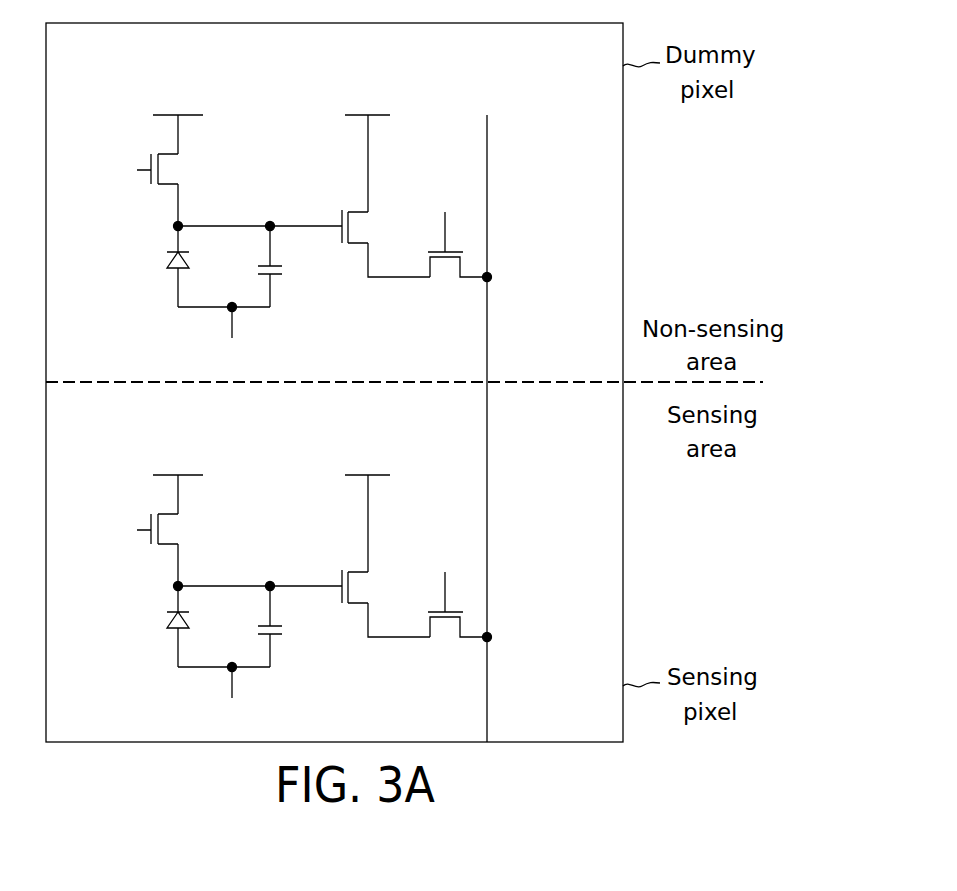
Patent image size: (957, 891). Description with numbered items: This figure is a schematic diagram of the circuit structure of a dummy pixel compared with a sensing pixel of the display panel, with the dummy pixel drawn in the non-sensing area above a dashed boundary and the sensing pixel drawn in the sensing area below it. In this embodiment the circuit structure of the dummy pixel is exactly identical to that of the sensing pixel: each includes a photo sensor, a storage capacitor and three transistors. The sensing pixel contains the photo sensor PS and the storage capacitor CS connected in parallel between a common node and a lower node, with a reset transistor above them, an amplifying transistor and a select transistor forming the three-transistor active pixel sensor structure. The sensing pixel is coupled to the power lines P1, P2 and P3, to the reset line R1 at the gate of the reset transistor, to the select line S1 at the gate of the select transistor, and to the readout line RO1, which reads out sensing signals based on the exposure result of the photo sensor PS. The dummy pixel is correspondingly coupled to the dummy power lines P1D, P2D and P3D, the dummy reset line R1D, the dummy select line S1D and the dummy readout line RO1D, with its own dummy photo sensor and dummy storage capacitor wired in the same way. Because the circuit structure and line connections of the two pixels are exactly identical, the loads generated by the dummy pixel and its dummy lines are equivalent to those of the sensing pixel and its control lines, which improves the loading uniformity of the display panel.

The dummy power line P1D is at (178, 119).
The dummy reset line R1D is at (131, 190).
The dummy power line P3D is at (232, 339).
The dummy power line P2D is at (386, 180).
The dummy select line S1D is at (453, 228).
The dummy readout line RO1D is at (492, 233).
The power line P1 is at (178, 479).
The reset line R1 is at (139, 550).
The photo sensor PS is at (161, 626).
The storage capacitor CS is at (288, 626).
The power line P3 is at (232, 699).
The power line P2 is at (386, 540).
The select line S1 is at (457, 588).
The readout line RO1 is at (492, 562).